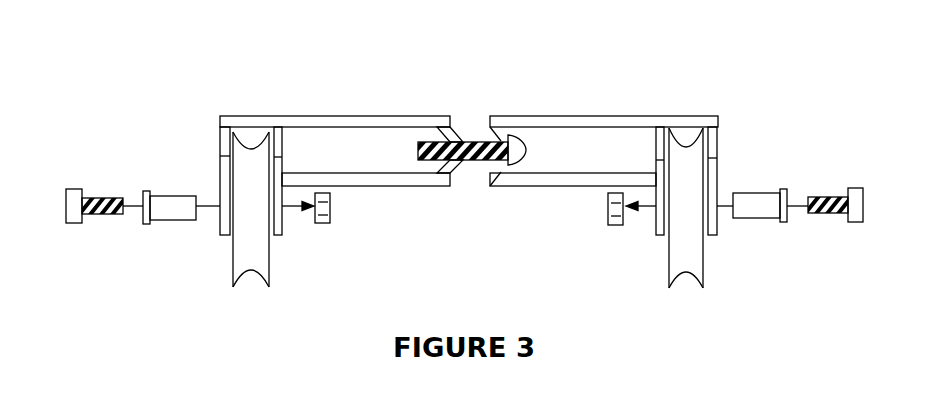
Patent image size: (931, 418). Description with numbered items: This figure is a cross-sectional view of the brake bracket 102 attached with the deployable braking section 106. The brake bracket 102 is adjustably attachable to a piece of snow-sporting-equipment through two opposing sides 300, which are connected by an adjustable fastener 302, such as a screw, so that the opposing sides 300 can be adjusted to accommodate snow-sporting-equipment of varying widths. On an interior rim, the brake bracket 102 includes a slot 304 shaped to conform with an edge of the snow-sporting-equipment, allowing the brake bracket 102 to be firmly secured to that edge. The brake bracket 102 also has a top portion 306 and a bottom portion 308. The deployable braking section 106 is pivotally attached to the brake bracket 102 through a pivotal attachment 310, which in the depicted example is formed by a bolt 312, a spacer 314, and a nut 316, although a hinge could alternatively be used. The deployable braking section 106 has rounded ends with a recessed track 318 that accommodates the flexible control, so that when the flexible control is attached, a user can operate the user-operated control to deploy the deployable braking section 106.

The brake bracket 102 is at (728, 119).
The deployable braking section 106 is at (715, 258).
The opposing sides 300 is at (290, 106).
The adjustable fastener 302 is at (476, 124).
The slot 304 is at (362, 146).
The top portion 306 is at (573, 104).
The bottom portion 308 is at (540, 198).
The pivotal attachment 310 is at (323, 230).
The bolt 312 is at (92, 185).
The spacer 314 is at (165, 180).
The nut 316 is at (341, 231).
The recessed track 318 is at (683, 295).